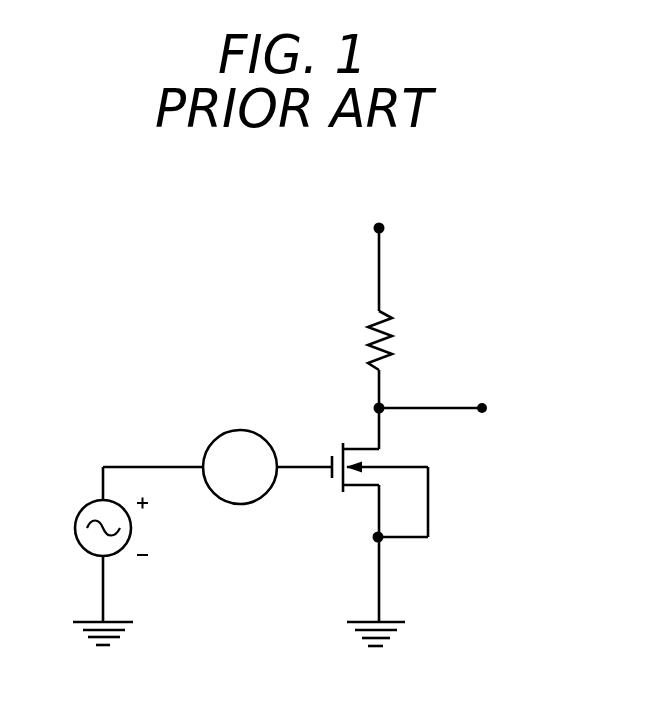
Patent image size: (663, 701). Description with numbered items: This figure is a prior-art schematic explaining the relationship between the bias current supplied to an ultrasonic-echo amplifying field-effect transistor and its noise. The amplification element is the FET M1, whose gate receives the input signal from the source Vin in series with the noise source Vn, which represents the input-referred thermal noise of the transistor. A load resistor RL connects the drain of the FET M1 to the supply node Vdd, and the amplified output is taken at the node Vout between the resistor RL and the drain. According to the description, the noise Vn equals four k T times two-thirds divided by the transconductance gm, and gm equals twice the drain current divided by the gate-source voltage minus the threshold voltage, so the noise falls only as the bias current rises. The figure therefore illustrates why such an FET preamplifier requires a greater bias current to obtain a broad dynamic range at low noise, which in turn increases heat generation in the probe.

The supply voltage node Vdd is at (377, 252).
The load resistor RL is at (360, 359).
The output voltage node Vout is at (458, 412).
The FET M1 is at (352, 475).
The noise-in-input Vn is at (190, 467).
The input voltage source Vin is at (92, 544).